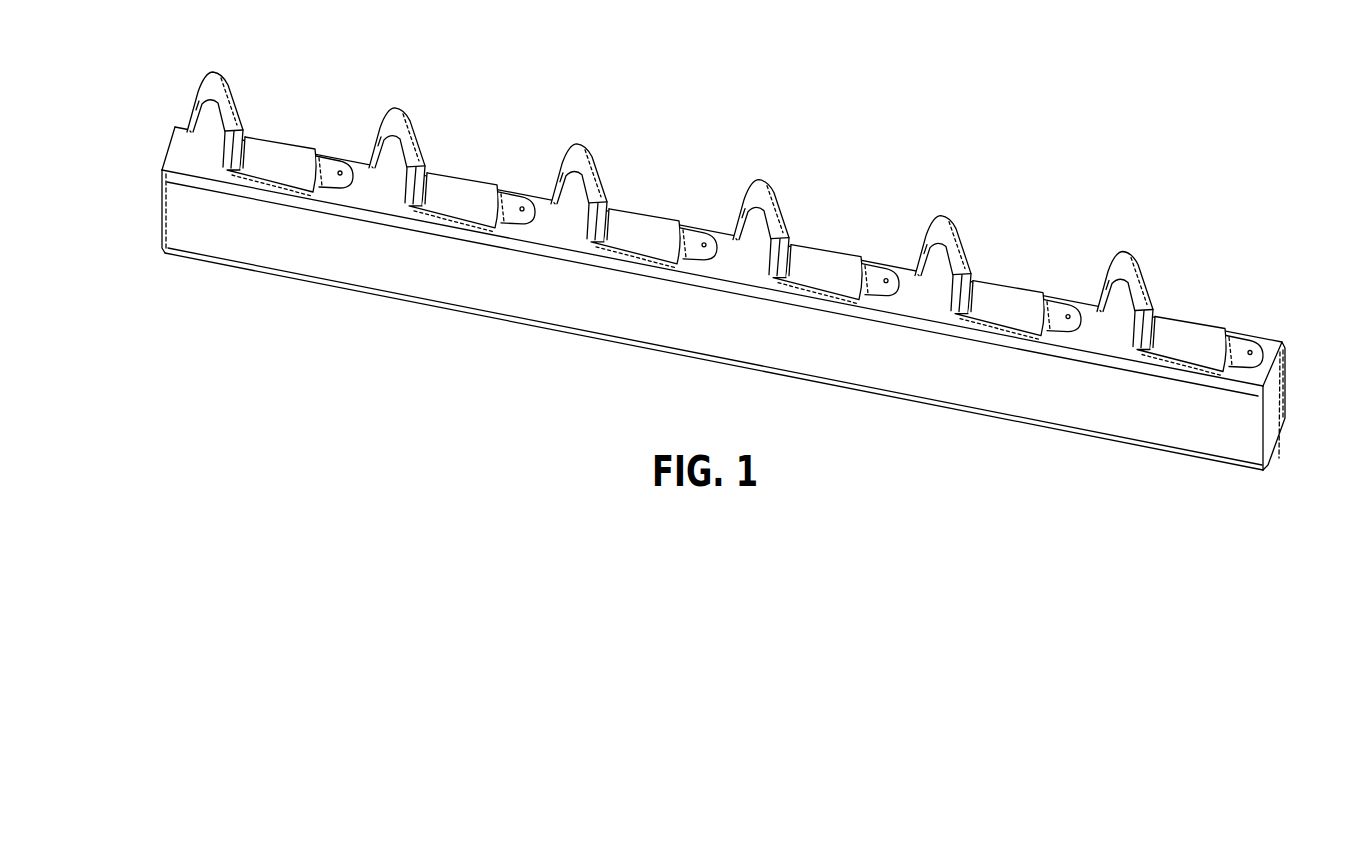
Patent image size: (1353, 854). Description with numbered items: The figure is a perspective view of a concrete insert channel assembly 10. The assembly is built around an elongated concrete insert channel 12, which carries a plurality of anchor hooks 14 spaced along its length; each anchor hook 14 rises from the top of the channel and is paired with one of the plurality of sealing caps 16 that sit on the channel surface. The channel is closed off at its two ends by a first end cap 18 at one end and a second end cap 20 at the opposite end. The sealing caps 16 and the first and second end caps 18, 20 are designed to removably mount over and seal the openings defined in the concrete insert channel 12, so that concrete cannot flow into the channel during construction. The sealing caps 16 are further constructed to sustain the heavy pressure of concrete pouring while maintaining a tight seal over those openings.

The concrete insert channel assembly 10 is at (874, 158).
The concrete insert channel 12 is at (428, 280).
The anchor hooks 14 is at (392, 110).
The sealing caps 16 is at (270, 178).
The first end cap 18 is at (159, 212).
The second end cap 20 is at (1281, 420).